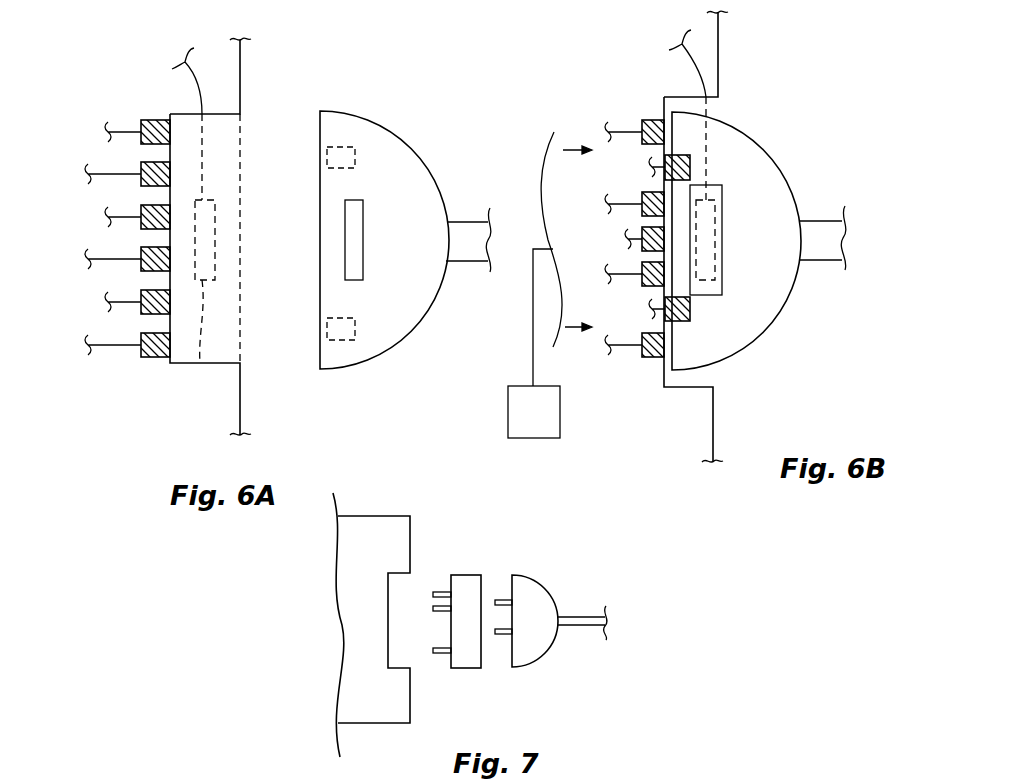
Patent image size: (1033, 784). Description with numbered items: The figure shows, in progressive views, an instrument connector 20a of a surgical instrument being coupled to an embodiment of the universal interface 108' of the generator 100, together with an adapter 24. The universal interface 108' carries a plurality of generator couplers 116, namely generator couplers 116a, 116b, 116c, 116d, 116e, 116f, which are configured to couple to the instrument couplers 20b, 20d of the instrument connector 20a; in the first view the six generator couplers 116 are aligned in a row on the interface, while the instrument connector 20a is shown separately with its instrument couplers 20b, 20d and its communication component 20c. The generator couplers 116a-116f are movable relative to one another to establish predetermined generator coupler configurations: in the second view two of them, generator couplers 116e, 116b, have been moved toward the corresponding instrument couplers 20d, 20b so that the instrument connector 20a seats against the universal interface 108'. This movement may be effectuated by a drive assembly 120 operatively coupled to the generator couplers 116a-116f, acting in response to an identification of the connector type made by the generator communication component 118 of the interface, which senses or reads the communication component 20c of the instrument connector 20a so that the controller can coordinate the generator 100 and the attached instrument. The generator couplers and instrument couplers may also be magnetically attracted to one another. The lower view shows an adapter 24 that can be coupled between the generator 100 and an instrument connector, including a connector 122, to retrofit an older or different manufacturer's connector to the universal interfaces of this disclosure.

In FIG. 6A, the generator couplers 116 is at (141, 117).
In FIG. 6A, the generator coupler 116a is at (141, 340).
In FIG. 6B, the generator coupler 116a is at (634, 345).
In FIG. 6A, the generator coupler 116b is at (141, 298).
In FIG. 6B, the generator coupler 116b is at (668, 324).
In FIG. 6A, the generator coupler 116c is at (141, 255).
In FIG. 6B, the generator coupler 116c is at (634, 256).
In FIG. 6A, the generator coupler 116d is at (141, 212).
In FIG. 6B, the generator coupler 116d is at (634, 204).
In FIG. 6A, the generator coupler 116e is at (141, 170).
In FIG. 6B, the generator coupler 116e is at (665, 171).
In FIG. 6A, the generator coupler 116f is at (141, 126).
In FIG. 6B, the generator coupler 116f is at (634, 132).
In FIG. 6A, the universal interface 108' is at (204, 236).
In FIG. 6B, the universal interface 108' is at (690, 236).
In FIG. 6A, the generator communication component 118 is at (200, 363).
In FIG. 6B, the generator communication component 118 is at (705, 240).
In FIG. 6B, the instrument connector 20a is at (412, 146).
In FIG. 6B, the instrument coupler 20b is at (331, 340).
In FIG. 6B, the communication component 20c is at (345, 243).
In FIG. 6B, the instrument coupler 20d is at (336, 147).
In FIG. 6B, the drive assembly 120 is at (508, 410).
In FIG. 7, the generator 100 is at (378, 516).
In FIG. 7, the connector 122 is at (467, 575).
In FIG. 7, the adapter 24 is at (532, 575).